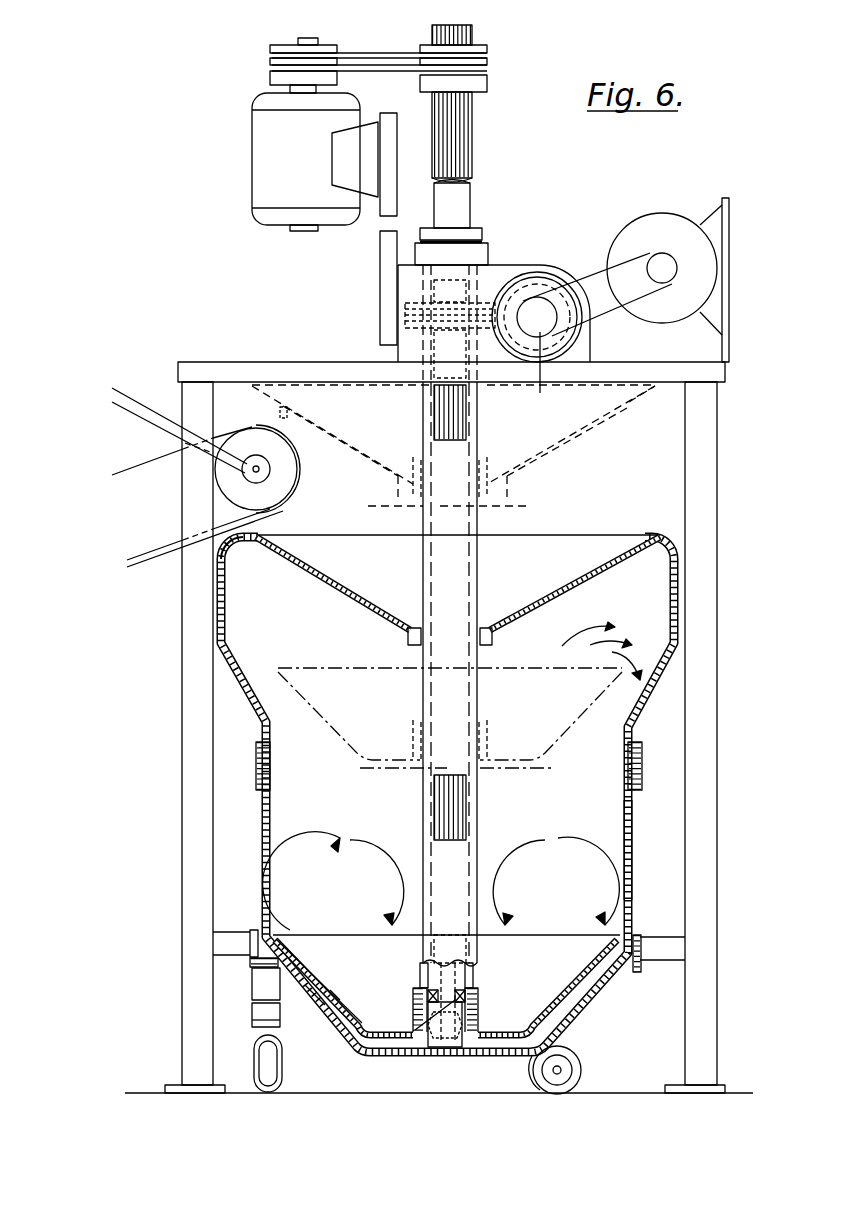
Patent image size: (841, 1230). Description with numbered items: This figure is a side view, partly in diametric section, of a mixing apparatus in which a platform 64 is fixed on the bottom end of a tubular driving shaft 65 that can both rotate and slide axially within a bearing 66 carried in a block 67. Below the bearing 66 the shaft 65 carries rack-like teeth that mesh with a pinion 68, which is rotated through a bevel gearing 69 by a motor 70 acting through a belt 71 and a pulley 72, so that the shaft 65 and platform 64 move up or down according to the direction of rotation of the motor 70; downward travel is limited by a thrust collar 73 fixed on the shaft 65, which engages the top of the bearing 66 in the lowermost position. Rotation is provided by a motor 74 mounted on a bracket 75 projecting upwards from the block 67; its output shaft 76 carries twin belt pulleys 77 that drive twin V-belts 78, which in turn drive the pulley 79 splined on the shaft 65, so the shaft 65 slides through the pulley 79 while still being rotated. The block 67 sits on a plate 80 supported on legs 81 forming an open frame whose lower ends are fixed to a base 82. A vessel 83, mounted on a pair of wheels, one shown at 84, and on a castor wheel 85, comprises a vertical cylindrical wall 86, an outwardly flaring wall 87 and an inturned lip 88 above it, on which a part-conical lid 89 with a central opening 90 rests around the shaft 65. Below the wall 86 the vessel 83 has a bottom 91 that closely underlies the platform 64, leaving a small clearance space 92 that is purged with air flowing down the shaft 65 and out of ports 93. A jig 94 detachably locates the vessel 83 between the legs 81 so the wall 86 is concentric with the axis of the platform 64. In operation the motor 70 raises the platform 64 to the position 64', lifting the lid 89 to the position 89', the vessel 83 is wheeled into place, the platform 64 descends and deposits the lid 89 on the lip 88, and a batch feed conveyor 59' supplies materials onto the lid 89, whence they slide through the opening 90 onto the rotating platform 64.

The batch feed conveyor 59' is at (206, 477).
The platform 64 is at (338, 981).
The uppermost position of platform 64' is at (453, 445).
The tubular driving shaft 65 is at (472, 845).
The bearing 66 is at (486, 256).
The block 67 is at (553, 279).
The pinion 68 is at (406, 318).
The bevel gearing 69 is at (508, 296).
The motor 70 is at (667, 313).
The belt 71 is at (600, 318).
The pulley 72 is at (536, 376).
The thrust collar 73 is at (480, 233).
The motor 74 is at (258, 155).
The bracket 75 is at (386, 272).
The output shaft 76 is at (312, 40).
The twin belt pulleys 77 is at (298, 67).
The twin V-belts 78 is at (378, 77).
The pulley 79 is at (485, 63).
The plate 80 is at (262, 364).
The legs 81 is at (182, 736).
The base 82 is at (645, 1094).
The vessel 83 is at (636, 857).
The wheel 84 is at (582, 1068).
The castor wheel 85 is at (270, 1057).
The vertical cylindrical wall 86 is at (273, 823).
The flaring wall 87 is at (250, 684).
The inturned lip 88 is at (254, 543).
The part-conical lid 89 is at (458, 591).
The uppermost position of lid 89' is at (655, 414).
The central opening 90 is at (492, 637).
The bottom 91 is at (587, 1005).
The clearance space 92 is at (503, 1043).
The ports 93 is at (450, 1043).
The jig 94 is at (250, 946).